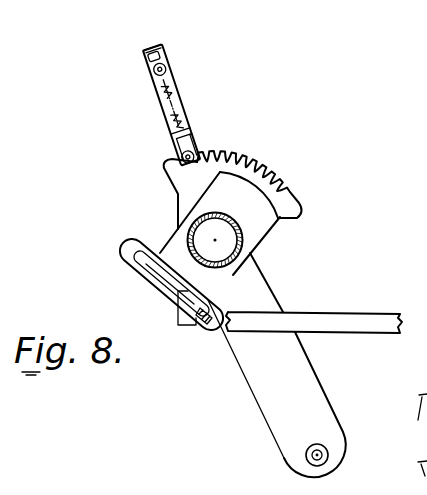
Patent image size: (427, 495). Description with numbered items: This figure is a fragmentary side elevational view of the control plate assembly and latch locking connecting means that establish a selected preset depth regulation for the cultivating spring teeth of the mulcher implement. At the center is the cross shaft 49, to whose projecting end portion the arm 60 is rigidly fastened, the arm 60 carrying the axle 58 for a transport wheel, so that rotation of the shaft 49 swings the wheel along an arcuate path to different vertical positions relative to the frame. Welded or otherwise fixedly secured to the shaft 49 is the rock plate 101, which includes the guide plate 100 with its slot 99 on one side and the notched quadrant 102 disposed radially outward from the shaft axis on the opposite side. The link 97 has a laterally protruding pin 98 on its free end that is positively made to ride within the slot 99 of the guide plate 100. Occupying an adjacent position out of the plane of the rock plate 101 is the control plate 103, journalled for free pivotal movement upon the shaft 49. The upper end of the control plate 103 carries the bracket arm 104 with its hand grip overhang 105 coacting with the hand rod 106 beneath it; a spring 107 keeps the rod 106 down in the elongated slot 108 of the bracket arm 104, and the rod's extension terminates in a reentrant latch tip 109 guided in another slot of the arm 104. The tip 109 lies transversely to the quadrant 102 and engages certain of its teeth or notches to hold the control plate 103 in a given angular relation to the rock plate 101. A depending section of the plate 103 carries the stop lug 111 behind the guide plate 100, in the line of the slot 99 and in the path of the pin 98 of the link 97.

The cross shaft 49 is at (291, 235).
The axle 58 is at (305, 453).
The arm 60 is at (265, 404).
The link 97 is at (348, 318).
The pin 98 is at (207, 329).
The slot 99 is at (147, 261).
The guide plate 100 is at (125, 242).
The rock plate 101 is at (231, 276).
The notched quadrant 102 is at (285, 180).
The control plate 103 is at (177, 195).
The bracket arm 104 is at (173, 91).
The hand grip overhang 105 is at (146, 45).
The hand rod 106 is at (156, 71).
The spring 107 is at (170, 115).
The elongated slot 108 is at (158, 61).
The latch tip 109 is at (193, 148).
The stop lug 111 is at (192, 308).